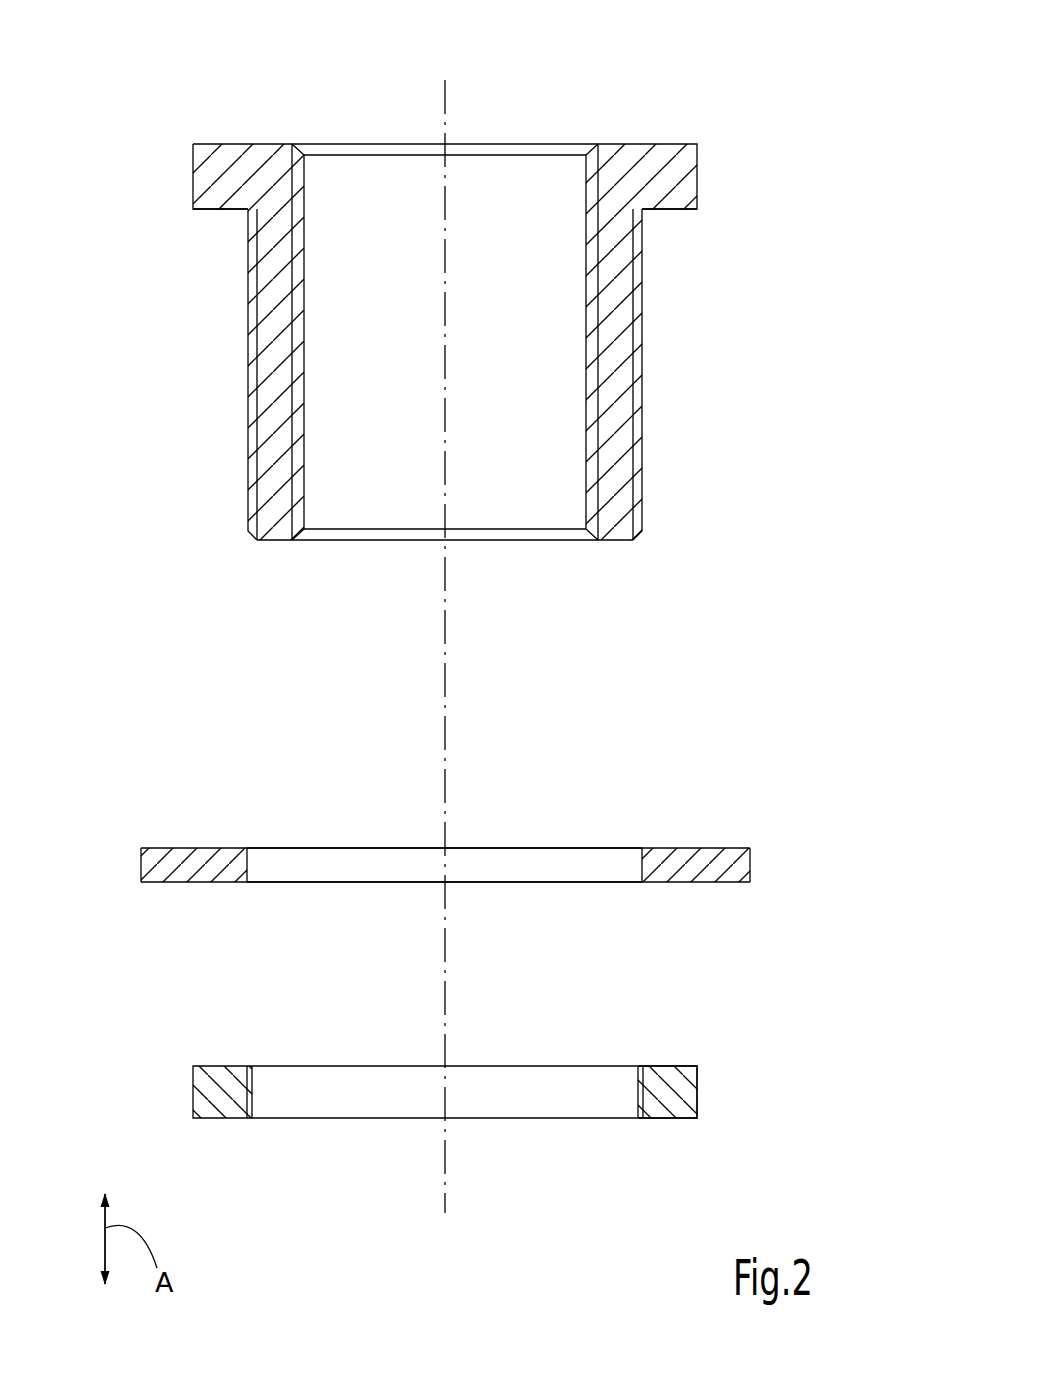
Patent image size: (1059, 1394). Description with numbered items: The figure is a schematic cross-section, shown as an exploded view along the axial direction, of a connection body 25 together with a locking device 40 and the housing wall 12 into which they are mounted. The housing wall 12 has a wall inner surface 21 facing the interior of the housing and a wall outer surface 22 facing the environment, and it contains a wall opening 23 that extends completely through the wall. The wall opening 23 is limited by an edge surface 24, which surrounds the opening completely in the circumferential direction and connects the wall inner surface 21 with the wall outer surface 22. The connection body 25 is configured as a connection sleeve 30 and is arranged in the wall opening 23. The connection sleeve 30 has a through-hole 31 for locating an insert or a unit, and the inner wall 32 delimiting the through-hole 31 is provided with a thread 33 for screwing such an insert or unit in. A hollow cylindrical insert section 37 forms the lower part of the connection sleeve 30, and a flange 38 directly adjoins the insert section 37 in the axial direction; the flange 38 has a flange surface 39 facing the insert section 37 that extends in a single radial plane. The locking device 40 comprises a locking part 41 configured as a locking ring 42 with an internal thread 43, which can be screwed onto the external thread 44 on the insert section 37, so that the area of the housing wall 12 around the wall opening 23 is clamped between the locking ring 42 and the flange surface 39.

The housing wall 12 is at (411, 862).
The wall inner surface 21 is at (182, 882).
The wall outer surface 22 is at (185, 844).
The wall opening 23 is at (502, 864).
The edge surface 24 is at (256, 858).
The connection body 25 is at (497, 327).
The connection sleeve 30 is at (497, 327).
The through-hole 31 is at (525, 518).
The inner wall 32 is at (344, 504).
The thread 33 is at (300, 437).
The insert section 37 is at (661, 357).
The flange 38 is at (685, 182).
The flange surface 39 is at (684, 213).
The locking device 40 is at (521, 1093).
The locking part 41 is at (673, 1145).
The locking ring 42 is at (662, 1098).
The internal thread 43 is at (253, 1098).
The external thread 44 is at (248, 368).